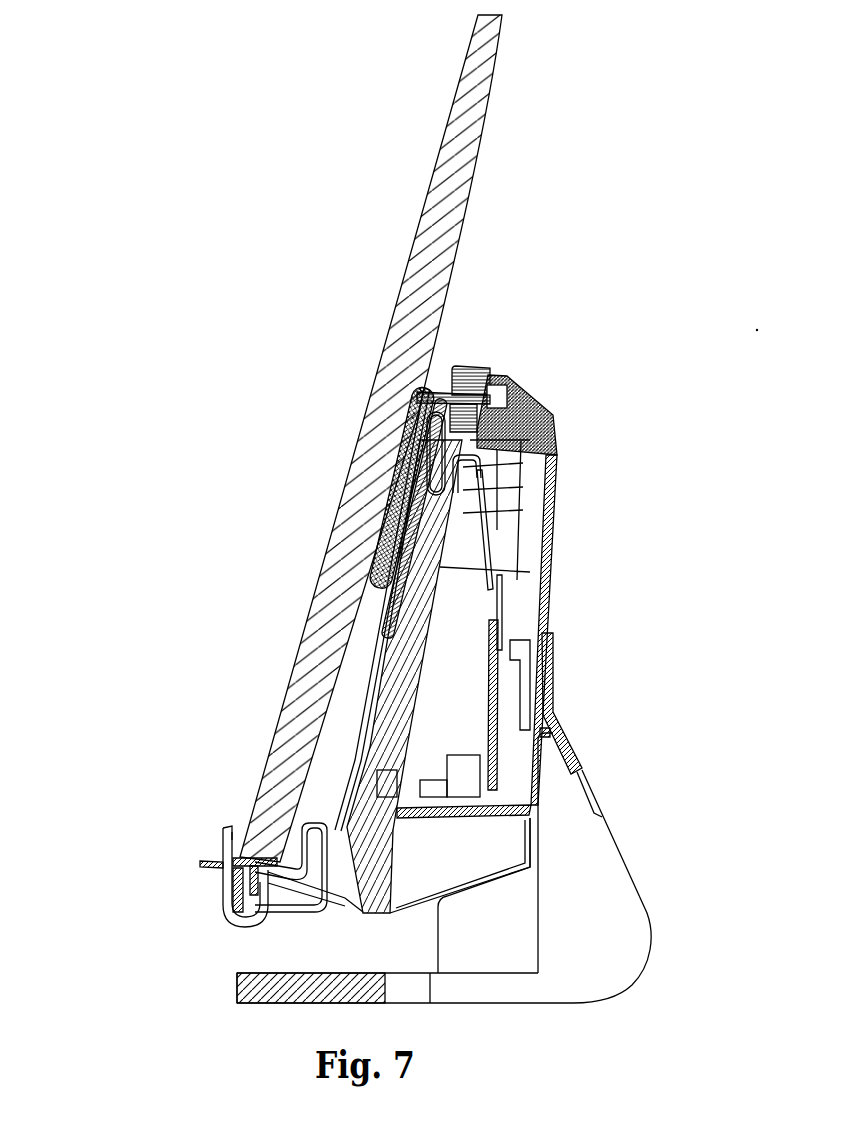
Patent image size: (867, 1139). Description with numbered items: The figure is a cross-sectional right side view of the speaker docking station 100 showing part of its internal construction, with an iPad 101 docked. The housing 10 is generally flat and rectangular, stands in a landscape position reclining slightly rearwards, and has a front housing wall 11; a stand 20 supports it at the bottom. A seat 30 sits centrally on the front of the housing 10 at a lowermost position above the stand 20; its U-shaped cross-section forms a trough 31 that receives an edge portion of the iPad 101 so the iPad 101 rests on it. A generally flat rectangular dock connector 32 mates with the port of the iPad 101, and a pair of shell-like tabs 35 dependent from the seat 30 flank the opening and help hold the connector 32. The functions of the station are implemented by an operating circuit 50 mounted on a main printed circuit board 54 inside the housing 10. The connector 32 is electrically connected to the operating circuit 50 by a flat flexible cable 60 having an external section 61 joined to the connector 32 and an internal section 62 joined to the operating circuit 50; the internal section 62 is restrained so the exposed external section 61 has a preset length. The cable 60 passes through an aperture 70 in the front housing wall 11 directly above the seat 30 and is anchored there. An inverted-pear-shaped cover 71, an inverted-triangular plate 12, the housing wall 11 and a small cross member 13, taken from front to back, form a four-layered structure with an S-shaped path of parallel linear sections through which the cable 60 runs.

The speaker docking station 100 is at (620, 219).
The iPad 101 is at (487, 152).
The housing 10 is at (527, 393).
The front housing wall 11 is at (410, 677).
The inverted-triangular plate 12 is at (395, 612).
The cross member 13 is at (478, 507).
The stand 20 is at (617, 962).
The seat 30 is at (220, 862).
The trough 31 is at (240, 830).
The dock connector 32 is at (230, 920).
The shell-like tabs 35 is at (223, 895).
The operating circuit 50 is at (500, 632).
The main printed circuit board 54 is at (561, 703).
The flexible cable 60 is at (367, 690).
The external section 61 is at (345, 787).
The internal section 62 is at (492, 548).
The aperture 70 is at (445, 500).
The cover 71 is at (402, 513).